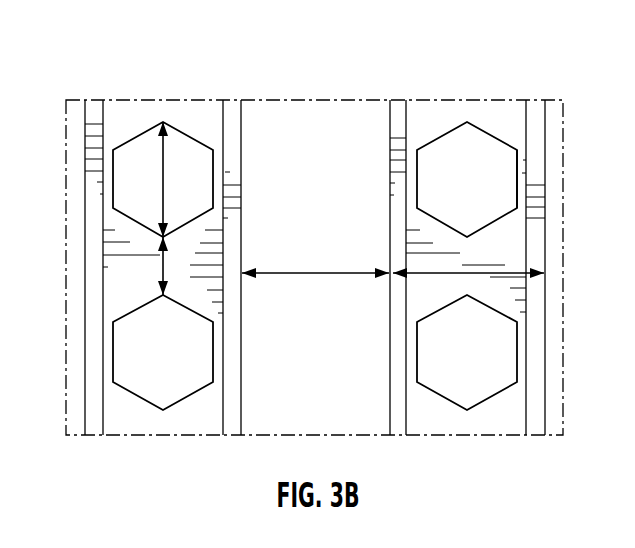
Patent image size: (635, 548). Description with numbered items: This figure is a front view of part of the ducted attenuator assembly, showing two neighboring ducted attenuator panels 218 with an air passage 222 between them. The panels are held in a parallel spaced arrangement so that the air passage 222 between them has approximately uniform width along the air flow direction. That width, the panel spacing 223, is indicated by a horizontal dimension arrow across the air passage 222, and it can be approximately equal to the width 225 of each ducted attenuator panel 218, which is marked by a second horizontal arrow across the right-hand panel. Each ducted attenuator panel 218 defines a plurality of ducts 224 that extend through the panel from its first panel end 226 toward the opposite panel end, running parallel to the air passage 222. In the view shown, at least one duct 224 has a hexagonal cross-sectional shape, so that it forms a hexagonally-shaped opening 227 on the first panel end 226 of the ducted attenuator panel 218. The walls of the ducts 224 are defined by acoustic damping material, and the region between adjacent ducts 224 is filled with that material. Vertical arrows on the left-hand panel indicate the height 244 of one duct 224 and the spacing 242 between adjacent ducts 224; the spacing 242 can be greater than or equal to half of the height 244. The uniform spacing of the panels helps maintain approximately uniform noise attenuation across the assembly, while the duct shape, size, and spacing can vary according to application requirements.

The ducted attenuator panel 218 is at (509, 109).
The air passage 222 is at (317, 124).
The panel spacing 223 is at (320, 275).
The duct 224 is at (435, 126).
The width 225 is at (502, 267).
The first panel end 226 is at (173, 107).
The hexagonally-shaped opening 227 is at (517, 177).
The spacing 242 is at (163, 275).
The height 244 is at (163, 193).